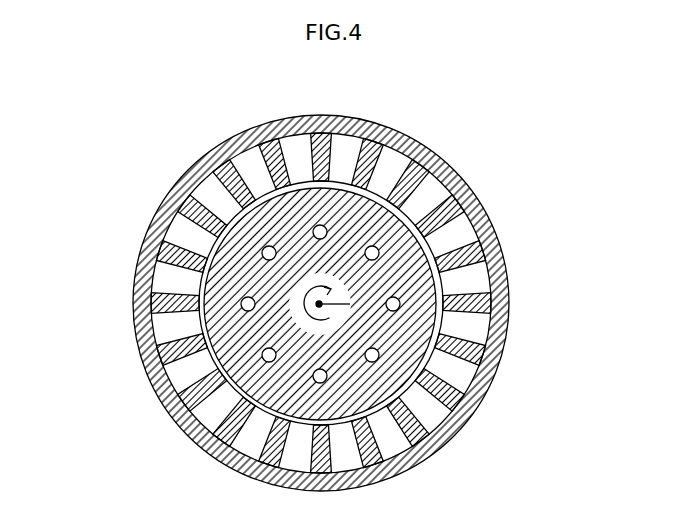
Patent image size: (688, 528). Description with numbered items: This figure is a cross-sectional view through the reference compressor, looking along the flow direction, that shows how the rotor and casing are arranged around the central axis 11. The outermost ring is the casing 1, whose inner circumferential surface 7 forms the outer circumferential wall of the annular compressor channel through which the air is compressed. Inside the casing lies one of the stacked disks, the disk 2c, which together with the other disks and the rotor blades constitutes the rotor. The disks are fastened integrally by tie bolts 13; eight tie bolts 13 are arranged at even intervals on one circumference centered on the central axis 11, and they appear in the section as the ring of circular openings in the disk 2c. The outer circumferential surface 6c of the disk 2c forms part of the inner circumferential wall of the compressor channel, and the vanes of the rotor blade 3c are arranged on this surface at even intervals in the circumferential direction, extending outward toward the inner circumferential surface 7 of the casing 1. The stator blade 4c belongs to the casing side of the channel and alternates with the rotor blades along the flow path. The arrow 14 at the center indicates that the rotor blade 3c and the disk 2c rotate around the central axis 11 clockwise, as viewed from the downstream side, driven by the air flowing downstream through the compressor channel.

The casing 1 is at (481, 206).
The disk 2c is at (280, 188).
The rotor blade 3c is at (181, 181).
The stator blade 4c is at (237, 162).
The outer circumferential surface 6c is at (412, 139).
The inner circumferential surface 7 is at (413, 182).
The central axis 11 is at (504, 353).
The tie bolt 13 is at (134, 320).
The arrow 14 is at (483, 262).